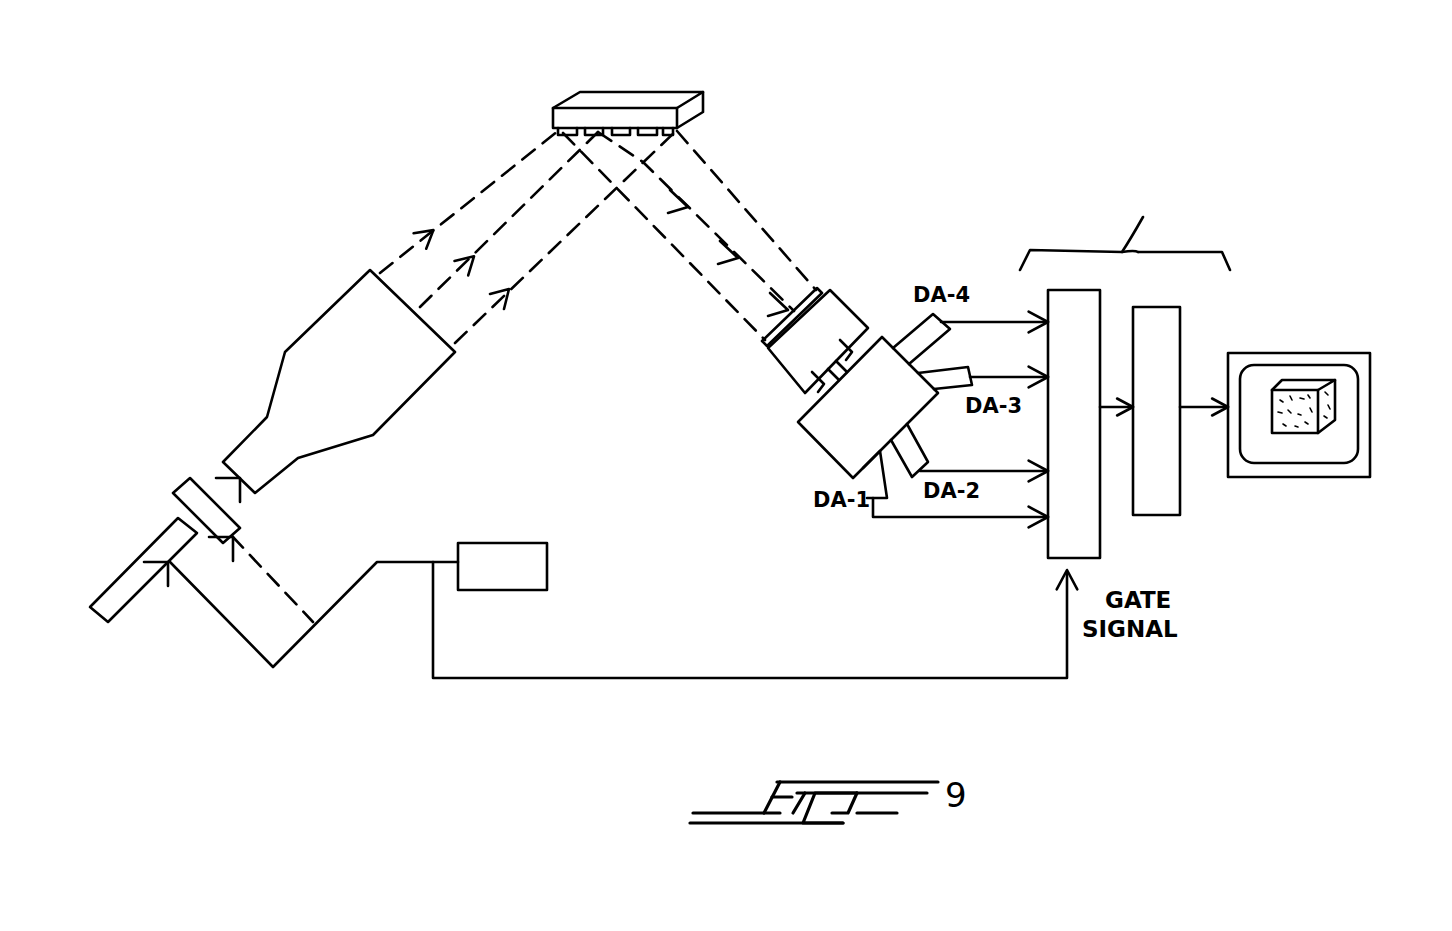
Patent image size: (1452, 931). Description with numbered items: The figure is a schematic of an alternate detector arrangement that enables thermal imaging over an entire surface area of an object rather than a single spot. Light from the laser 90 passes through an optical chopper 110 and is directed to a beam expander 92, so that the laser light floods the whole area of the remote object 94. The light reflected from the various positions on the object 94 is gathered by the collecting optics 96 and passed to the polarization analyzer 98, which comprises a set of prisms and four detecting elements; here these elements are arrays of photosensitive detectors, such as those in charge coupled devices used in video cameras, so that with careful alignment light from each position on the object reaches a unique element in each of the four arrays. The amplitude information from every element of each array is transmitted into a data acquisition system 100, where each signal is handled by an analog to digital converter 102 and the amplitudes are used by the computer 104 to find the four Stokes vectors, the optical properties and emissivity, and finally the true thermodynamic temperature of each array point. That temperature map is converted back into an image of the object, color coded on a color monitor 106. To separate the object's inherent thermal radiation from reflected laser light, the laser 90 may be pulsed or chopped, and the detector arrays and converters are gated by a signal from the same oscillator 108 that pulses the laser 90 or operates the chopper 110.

The laser 90 is at (160, 547).
The beam expander 92 is at (363, 389).
The remote object 94 is at (705, 102).
The collecting optics 96 is at (850, 312).
The polarization analyzer 98 is at (808, 438).
The data acquisition system 100 is at (1137, 385).
The analog to digital converter 102 is at (1090, 543).
The computer 104 is at (1170, 343).
The color monitor 106 is at (1370, 407).
The oscillator 108 is at (547, 563).
The optical chopper 110 is at (187, 488).